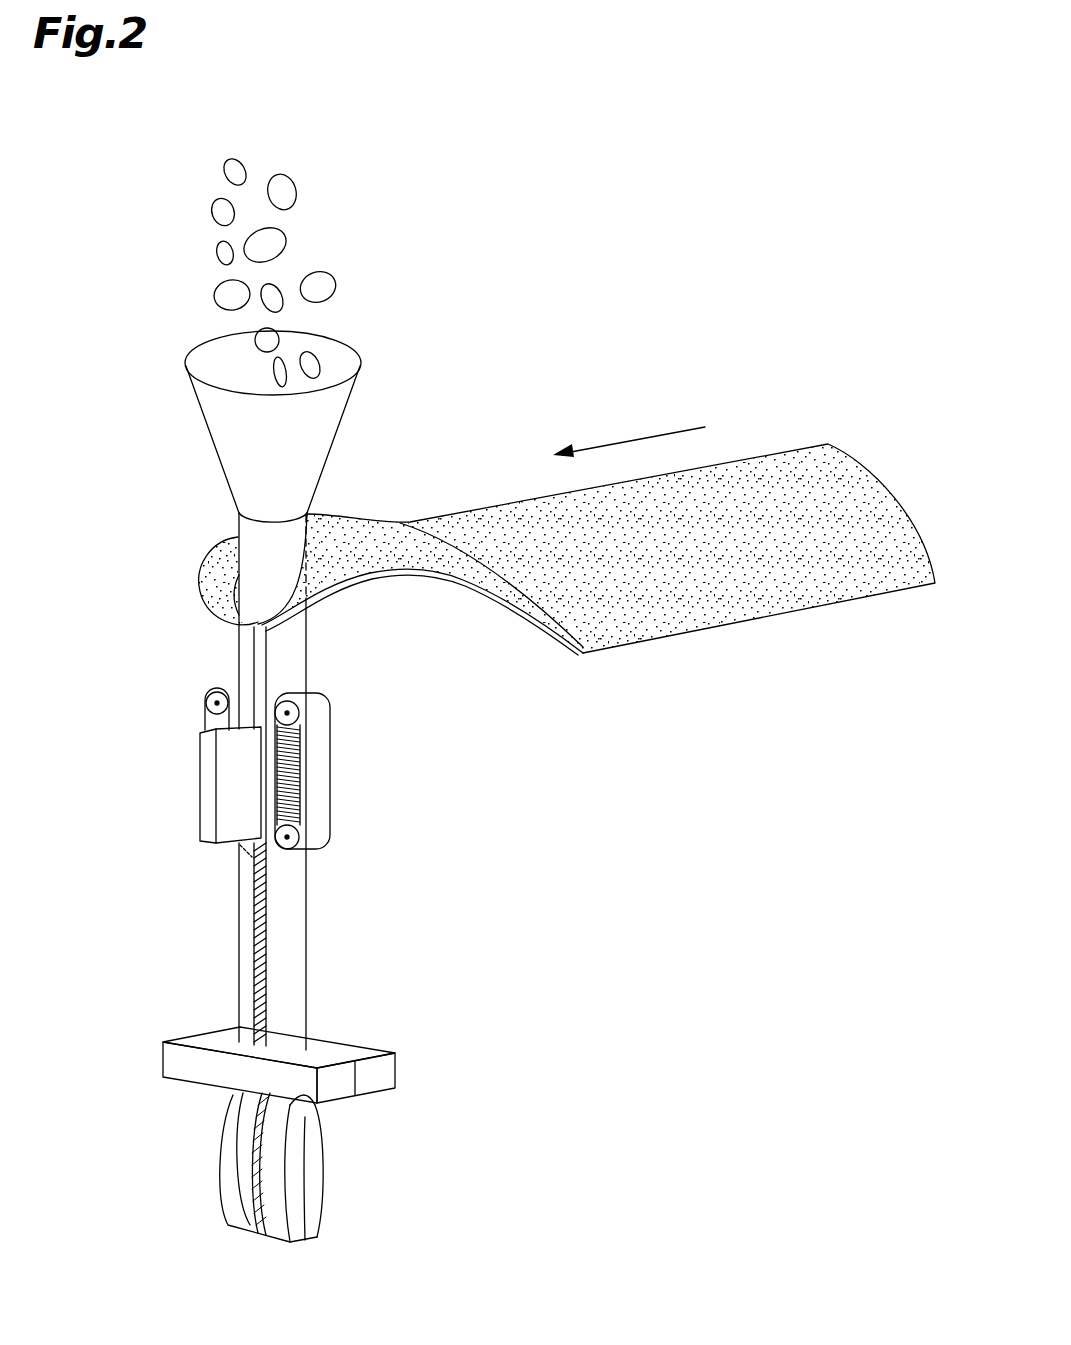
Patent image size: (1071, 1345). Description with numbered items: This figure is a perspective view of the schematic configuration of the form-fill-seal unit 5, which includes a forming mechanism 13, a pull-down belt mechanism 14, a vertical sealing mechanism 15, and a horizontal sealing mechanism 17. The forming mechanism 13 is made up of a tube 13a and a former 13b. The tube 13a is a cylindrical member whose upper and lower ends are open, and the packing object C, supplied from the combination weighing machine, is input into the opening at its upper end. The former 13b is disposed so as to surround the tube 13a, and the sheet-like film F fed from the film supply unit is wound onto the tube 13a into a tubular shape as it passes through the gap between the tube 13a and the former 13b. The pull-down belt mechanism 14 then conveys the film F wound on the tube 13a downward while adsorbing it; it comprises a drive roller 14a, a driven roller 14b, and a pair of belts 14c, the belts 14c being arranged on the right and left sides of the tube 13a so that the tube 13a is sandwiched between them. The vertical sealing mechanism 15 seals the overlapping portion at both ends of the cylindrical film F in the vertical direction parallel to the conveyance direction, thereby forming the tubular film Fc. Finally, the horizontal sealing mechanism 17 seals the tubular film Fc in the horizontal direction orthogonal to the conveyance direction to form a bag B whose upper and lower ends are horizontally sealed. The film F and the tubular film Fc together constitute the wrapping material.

The form-fill-seal unit 5 is at (403, 284).
The packing object C is at (169, 148).
The film F is at (758, 495).
The forming mechanism 13 is at (184, 596).
The tube 13a is at (423, 568).
The former 13b is at (237, 532).
The pull-down belt mechanism 14 is at (356, 752).
The drive roller 14a is at (291, 697).
The driven roller 14b is at (278, 857).
The pair of belts 14c is at (322, 783).
The vertical sealing mechanism 15 is at (186, 788).
The horizontal sealing mechanism 17 is at (414, 1069).
The tubular film Fc is at (288, 912).
The bag B is at (313, 1175).